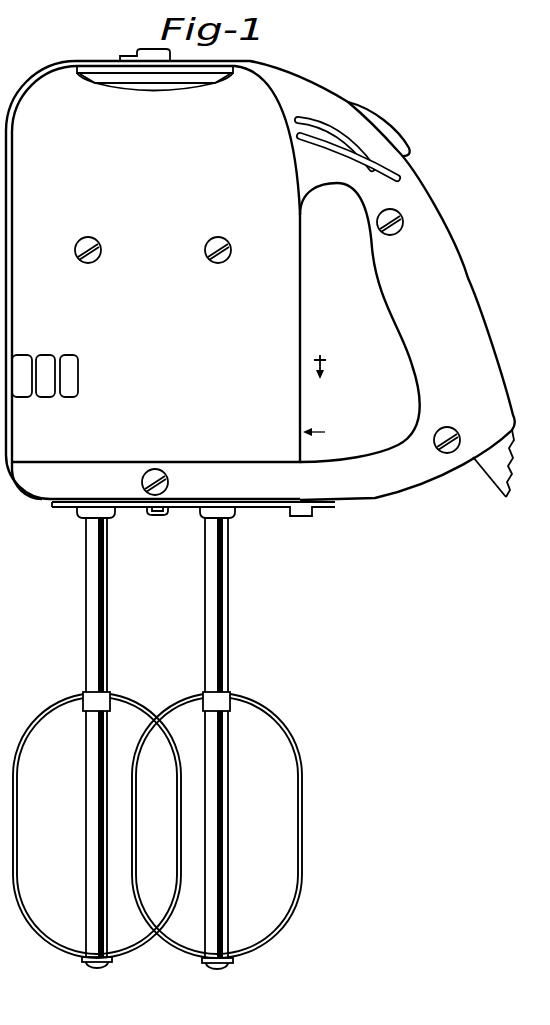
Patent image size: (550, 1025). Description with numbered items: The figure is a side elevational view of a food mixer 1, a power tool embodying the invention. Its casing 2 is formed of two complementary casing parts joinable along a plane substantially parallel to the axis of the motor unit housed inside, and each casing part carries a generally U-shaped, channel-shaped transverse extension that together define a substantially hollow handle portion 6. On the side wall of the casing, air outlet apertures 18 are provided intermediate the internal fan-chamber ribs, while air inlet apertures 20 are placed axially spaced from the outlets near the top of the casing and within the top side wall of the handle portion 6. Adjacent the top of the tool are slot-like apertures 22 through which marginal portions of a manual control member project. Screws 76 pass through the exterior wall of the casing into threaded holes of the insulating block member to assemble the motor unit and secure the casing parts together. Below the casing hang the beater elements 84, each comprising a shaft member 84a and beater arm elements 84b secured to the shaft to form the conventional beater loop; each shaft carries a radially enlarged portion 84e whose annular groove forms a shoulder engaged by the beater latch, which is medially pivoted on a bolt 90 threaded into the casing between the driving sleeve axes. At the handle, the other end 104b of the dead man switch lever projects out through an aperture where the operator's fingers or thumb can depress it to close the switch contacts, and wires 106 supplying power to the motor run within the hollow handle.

The food mixer 1 is at (257, 520).
The casing 2 is at (321, 430).
The handle portion 6 is at (440, 189).
The air outlet apertures 18 is at (72, 356).
The air inlet apertures 20 is at (345, 140).
The slot-like apertures 22 is at (223, 77).
The screws 76 is at (206, 258).
The beater elements 84 is at (157, 749).
The shaft member 84a is at (212, 612).
The beater arm elements 84b is at (184, 702).
The radially enlarged portion 84e is at (200, 518).
The bolt 90 is at (153, 515).
The other end of dead man switch lever 104b is at (402, 130).
The wires 106 is at (498, 484).